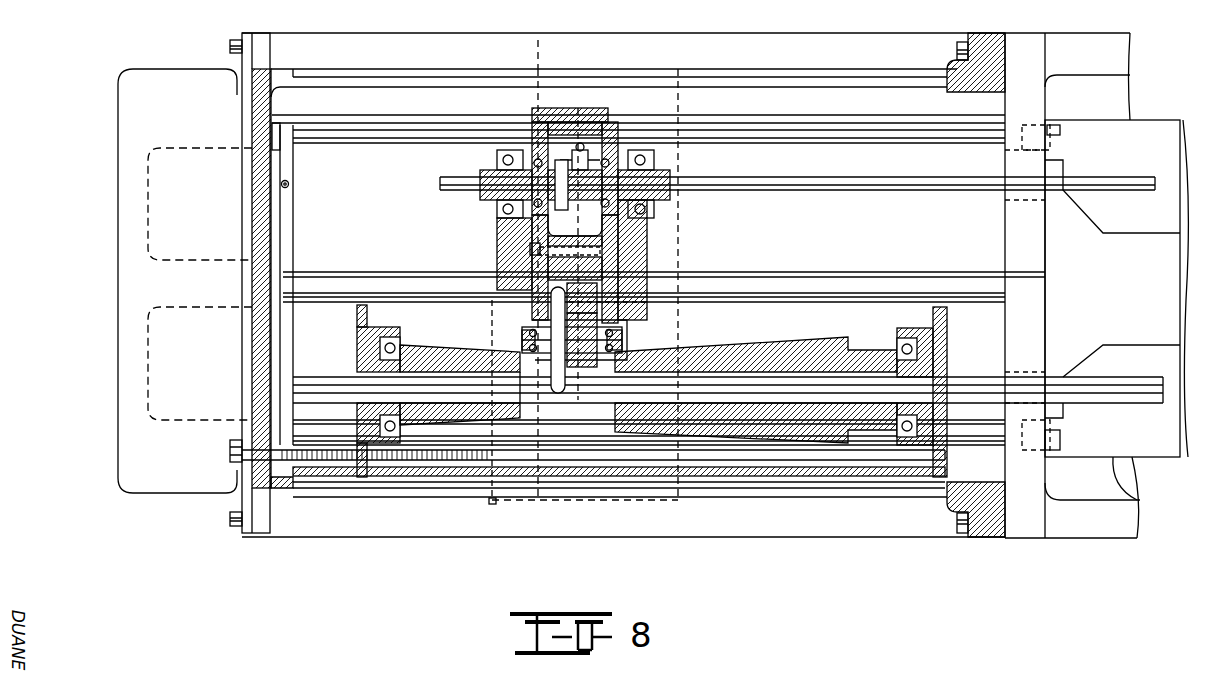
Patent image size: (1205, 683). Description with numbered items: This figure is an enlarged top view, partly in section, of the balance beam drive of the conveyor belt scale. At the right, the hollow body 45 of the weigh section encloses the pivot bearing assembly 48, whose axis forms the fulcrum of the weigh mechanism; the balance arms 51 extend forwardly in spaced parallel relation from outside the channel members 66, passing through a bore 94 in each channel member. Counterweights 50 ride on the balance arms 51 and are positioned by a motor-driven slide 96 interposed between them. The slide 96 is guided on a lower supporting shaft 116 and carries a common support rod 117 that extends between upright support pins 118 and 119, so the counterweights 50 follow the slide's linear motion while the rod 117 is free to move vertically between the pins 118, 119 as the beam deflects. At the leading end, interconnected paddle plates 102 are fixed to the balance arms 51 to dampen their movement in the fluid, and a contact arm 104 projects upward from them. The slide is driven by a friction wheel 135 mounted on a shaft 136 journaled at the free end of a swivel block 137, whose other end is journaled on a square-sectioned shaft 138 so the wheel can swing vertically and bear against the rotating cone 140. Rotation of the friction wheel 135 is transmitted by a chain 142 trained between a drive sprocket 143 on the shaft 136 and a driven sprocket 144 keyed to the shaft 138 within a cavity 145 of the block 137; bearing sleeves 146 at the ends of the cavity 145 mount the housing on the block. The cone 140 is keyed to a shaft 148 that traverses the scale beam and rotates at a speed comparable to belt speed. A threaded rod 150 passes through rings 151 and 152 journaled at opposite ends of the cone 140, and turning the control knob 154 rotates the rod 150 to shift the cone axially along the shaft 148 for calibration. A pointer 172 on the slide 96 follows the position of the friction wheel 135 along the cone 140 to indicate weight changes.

The hollow body 45 is at (1085, 540).
The pivot bearing assembly 48 is at (1147, 457).
The counterweights 50 is at (680, 100).
The balance arms 51 is at (817, 143).
The channel members 66 is at (1133, 120).
The bore 94 is at (1050, 122).
The motor-driven slide 96 is at (493, 224).
The paddle plates 102 is at (145, 178).
The contact arm 104 is at (289, 184).
The lower supporting shaft 116 is at (793, 275).
The common support rod 117 is at (537, 85).
The upright support pin 118 is at (535, 244).
The upright support pin 119 is at (540, 251).
The friction wheel 135 is at (563, 395).
The shaft 136 is at (520, 323).
The swivel block 137 is at (607, 232).
The square-sectioned shaft 138 is at (923, 177).
The rotating cone 140 is at (788, 345).
The chain 142 is at (648, 305).
The drive sprocket 143 is at (576, 368).
The driven sprocket 144 is at (578, 152).
The cavity 145 is at (552, 145).
The bearing sleeves 146 is at (480, 173).
The shaft 148 is at (983, 378).
The threaded rod 150 is at (318, 460).
The ring 151 is at (357, 330).
The ring 152 is at (932, 326).
The control knob 154 is at (230, 452).
The pointer 172 is at (493, 504).